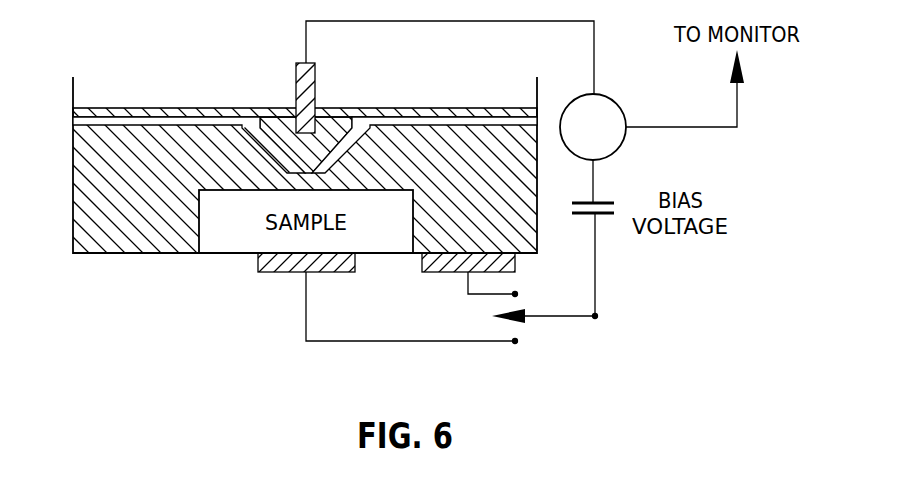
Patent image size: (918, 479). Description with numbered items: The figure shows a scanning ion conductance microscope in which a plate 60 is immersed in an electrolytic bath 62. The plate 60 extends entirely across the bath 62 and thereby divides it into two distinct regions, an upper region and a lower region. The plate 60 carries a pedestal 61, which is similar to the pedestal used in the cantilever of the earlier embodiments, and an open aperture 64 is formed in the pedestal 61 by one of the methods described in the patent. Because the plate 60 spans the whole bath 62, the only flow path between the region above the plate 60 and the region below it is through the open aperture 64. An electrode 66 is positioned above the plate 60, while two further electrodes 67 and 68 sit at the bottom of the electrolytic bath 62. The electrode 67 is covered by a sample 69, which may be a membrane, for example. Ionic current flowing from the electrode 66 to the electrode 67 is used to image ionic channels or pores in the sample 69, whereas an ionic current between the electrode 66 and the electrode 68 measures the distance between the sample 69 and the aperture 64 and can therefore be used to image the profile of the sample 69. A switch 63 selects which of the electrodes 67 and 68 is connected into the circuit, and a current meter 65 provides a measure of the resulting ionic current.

The plate 60 is at (410, 117).
The pedestal 61 is at (250, 155).
The electrolytic bath 62 is at (156, 70).
The switch 63 is at (535, 348).
The open aperture 64 is at (296, 184).
The current meter 65 is at (618, 106).
The electrode 66 is at (316, 84).
The electrode 67 is at (282, 273).
The electrode 68 is at (440, 273).
The sample 69 is at (232, 251).